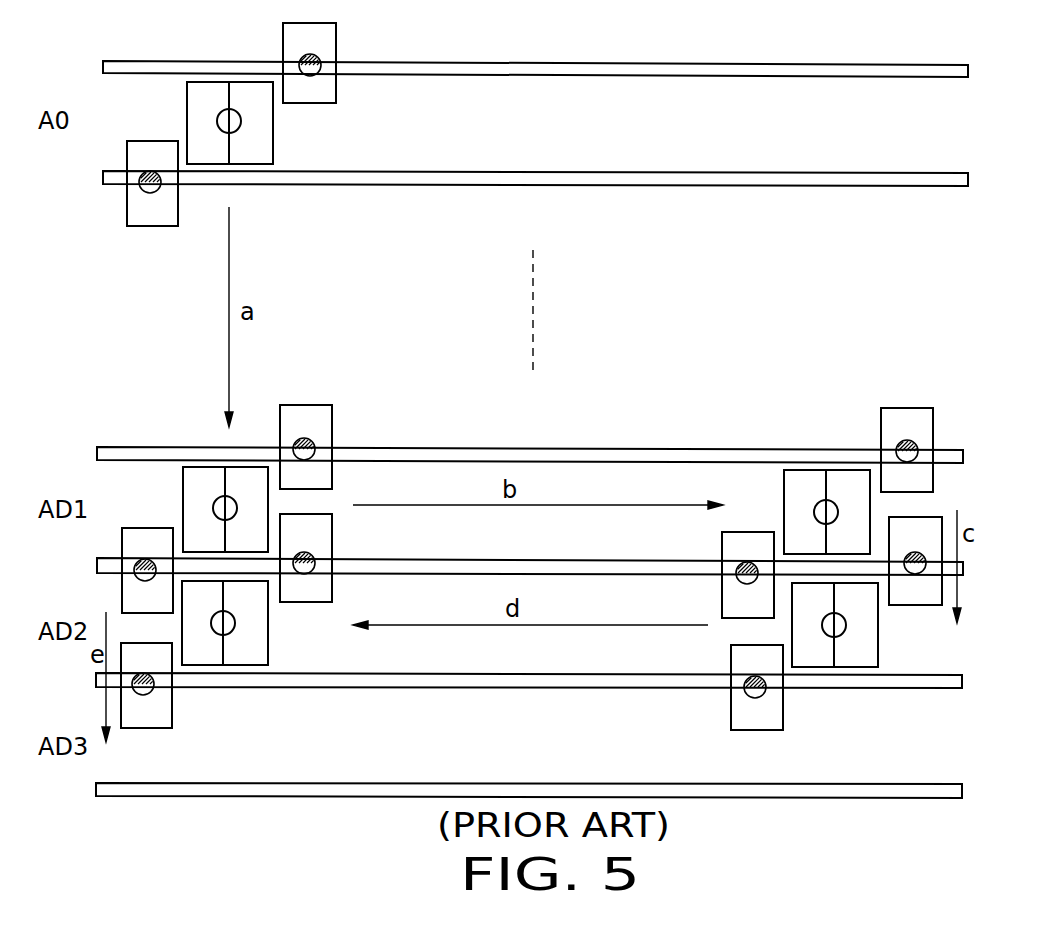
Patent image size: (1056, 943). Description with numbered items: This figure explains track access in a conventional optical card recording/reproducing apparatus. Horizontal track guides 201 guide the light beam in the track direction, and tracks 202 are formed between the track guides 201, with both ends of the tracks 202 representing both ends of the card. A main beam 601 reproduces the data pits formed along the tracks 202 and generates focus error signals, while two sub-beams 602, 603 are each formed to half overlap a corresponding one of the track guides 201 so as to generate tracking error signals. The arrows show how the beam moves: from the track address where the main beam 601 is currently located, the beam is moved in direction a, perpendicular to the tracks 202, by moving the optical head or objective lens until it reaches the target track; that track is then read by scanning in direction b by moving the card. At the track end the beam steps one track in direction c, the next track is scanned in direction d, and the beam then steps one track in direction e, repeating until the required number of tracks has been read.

The track guide 201 is at (968, 68).
The track 202 is at (937, 131).
The main beam 601 is at (240, 120).
The sub-beam 602 is at (320, 54).
The sub-beam 603 is at (150, 193).